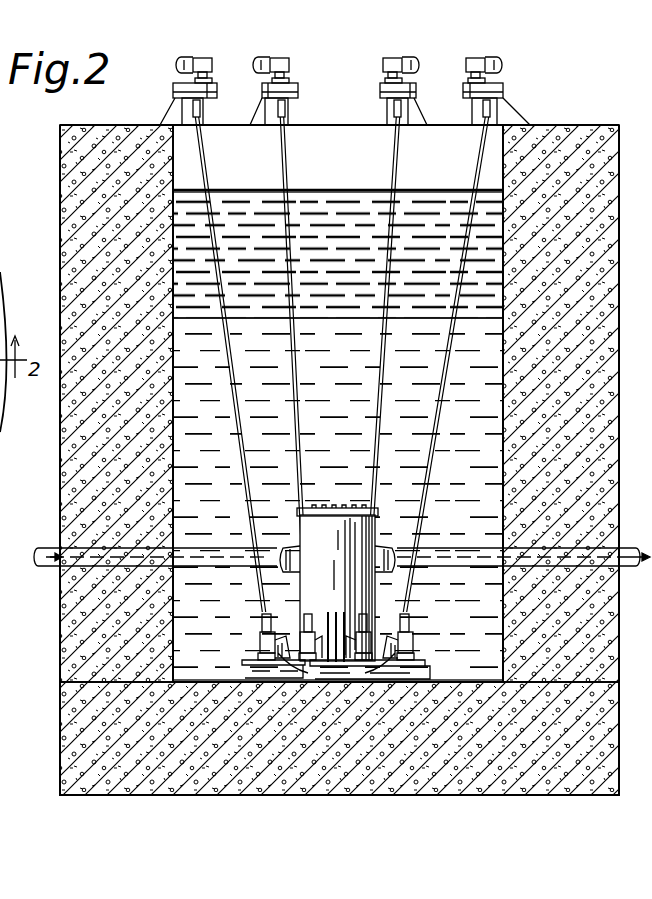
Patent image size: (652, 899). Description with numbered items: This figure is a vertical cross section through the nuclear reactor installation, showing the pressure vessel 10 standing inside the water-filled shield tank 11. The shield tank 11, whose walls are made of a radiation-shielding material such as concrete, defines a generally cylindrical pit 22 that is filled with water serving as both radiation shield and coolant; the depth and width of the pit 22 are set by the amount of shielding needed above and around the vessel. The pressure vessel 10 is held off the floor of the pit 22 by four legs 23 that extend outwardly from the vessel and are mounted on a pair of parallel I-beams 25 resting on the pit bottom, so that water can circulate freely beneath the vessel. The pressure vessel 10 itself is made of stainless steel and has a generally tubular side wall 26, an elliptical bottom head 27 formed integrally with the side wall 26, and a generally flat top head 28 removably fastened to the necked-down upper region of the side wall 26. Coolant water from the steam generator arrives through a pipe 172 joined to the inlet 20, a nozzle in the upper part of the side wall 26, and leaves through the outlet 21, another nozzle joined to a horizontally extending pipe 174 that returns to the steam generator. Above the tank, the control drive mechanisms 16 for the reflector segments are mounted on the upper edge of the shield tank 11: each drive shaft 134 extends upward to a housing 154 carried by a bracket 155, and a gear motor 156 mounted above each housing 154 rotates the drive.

The pressure vessel 10 is at (352, 586).
The shield tank 11 is at (645, 106).
The control drive mechanisms 16 is at (372, 73).
The inlet 20 is at (284, 546).
The outlet 21 is at (391, 546).
The pit 22 is at (205, 650).
The legs 23 is at (425, 665).
The I-beams 25 is at (420, 672).
The side wall 26 is at (337, 588).
The bottom head 27 is at (300, 682).
The top head 28 is at (325, 507).
The drive shaft 134 is at (280, 165).
The housing 154 is at (463, 92).
The bracket 155 is at (510, 112).
The gear motor 156 is at (395, 58).
The pipe 172 is at (75, 551).
The pipe 174 is at (600, 555).